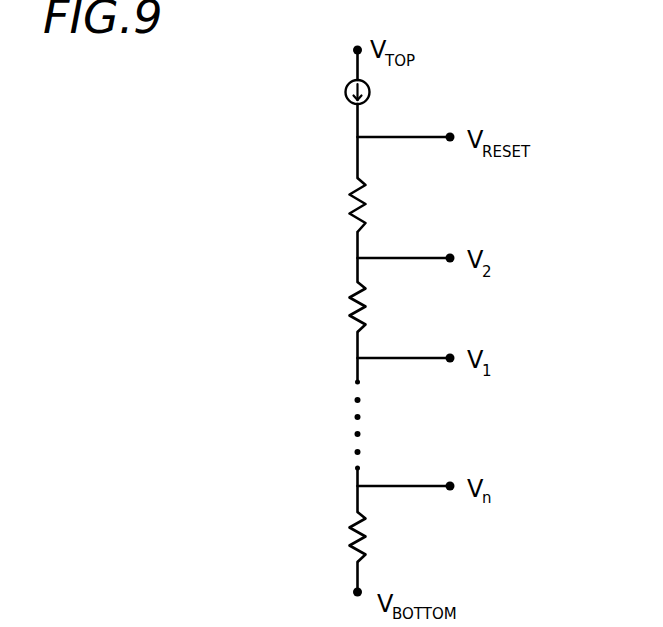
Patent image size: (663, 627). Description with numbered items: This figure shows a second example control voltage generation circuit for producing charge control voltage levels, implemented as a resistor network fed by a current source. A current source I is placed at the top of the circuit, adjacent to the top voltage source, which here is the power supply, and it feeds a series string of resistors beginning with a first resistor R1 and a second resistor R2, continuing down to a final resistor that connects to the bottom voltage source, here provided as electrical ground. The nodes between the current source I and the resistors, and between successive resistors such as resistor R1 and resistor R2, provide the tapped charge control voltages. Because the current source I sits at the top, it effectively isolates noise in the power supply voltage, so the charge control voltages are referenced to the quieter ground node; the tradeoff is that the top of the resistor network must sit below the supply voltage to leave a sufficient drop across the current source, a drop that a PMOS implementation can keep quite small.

The current source I is at (386, 81).
The resistor R1 is at (330, 205).
The resistor R2 is at (330, 307).